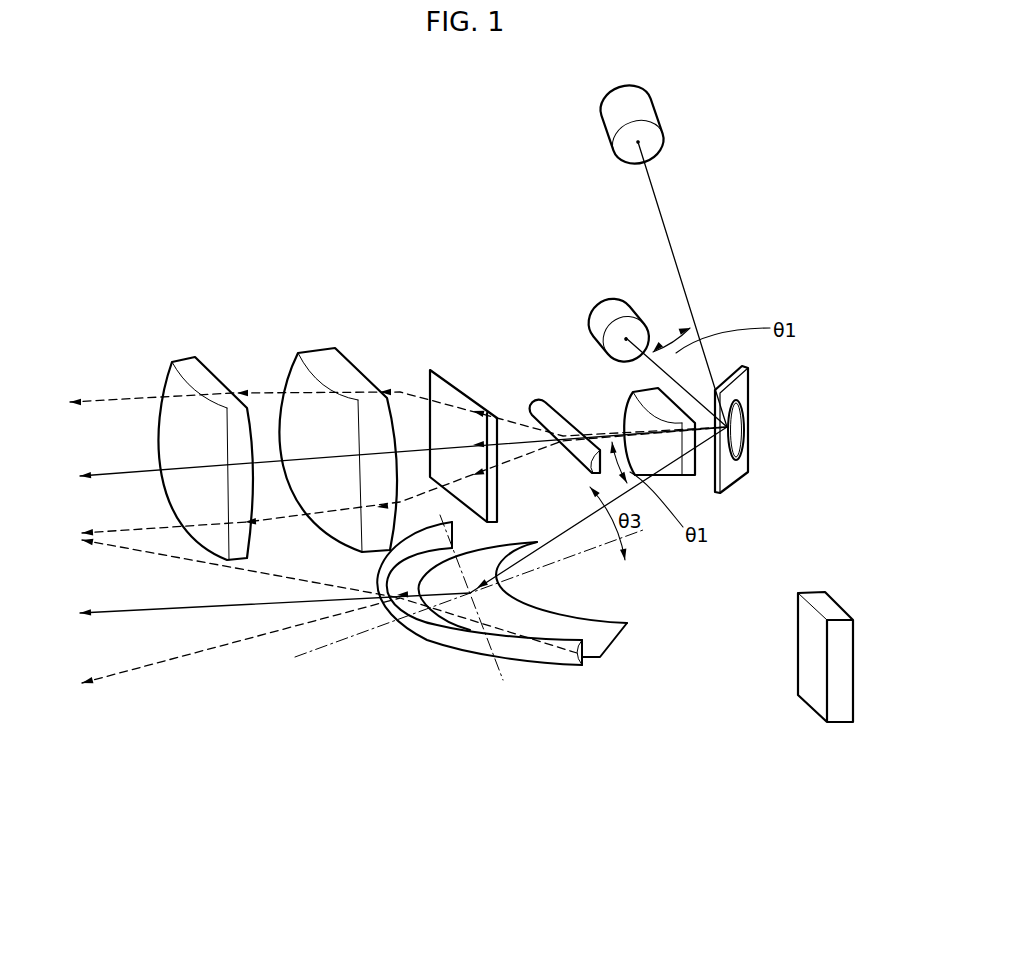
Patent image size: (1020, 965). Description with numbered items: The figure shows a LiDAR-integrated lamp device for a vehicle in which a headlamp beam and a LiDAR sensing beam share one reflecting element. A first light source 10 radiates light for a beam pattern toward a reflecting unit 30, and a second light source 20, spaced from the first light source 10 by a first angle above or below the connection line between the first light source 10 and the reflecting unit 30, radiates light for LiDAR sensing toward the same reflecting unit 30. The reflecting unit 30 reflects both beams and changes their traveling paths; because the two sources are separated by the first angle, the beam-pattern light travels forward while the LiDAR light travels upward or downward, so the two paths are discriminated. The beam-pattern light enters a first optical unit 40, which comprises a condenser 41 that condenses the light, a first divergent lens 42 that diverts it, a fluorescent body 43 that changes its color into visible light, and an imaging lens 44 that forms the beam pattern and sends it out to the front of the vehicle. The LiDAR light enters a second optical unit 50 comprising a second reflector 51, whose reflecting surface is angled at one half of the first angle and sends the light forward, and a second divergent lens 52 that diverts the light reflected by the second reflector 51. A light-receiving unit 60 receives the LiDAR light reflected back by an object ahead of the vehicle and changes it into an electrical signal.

The first light source 10 is at (610, 308).
The second light source 20 is at (647, 113).
The reflecting unit 30 is at (743, 390).
The first optical unit 40 is at (543, 256).
The condenser 41 is at (638, 405).
The first divergent lens 42 is at (543, 410).
The fluorescent body 43 is at (443, 372).
The imaging lens 44 is at (313, 358).
The second optical unit 50 is at (622, 730).
The second reflector 51 is at (598, 643).
The second divergent lens 52 is at (525, 657).
The light-receiving unit 60 is at (840, 708).